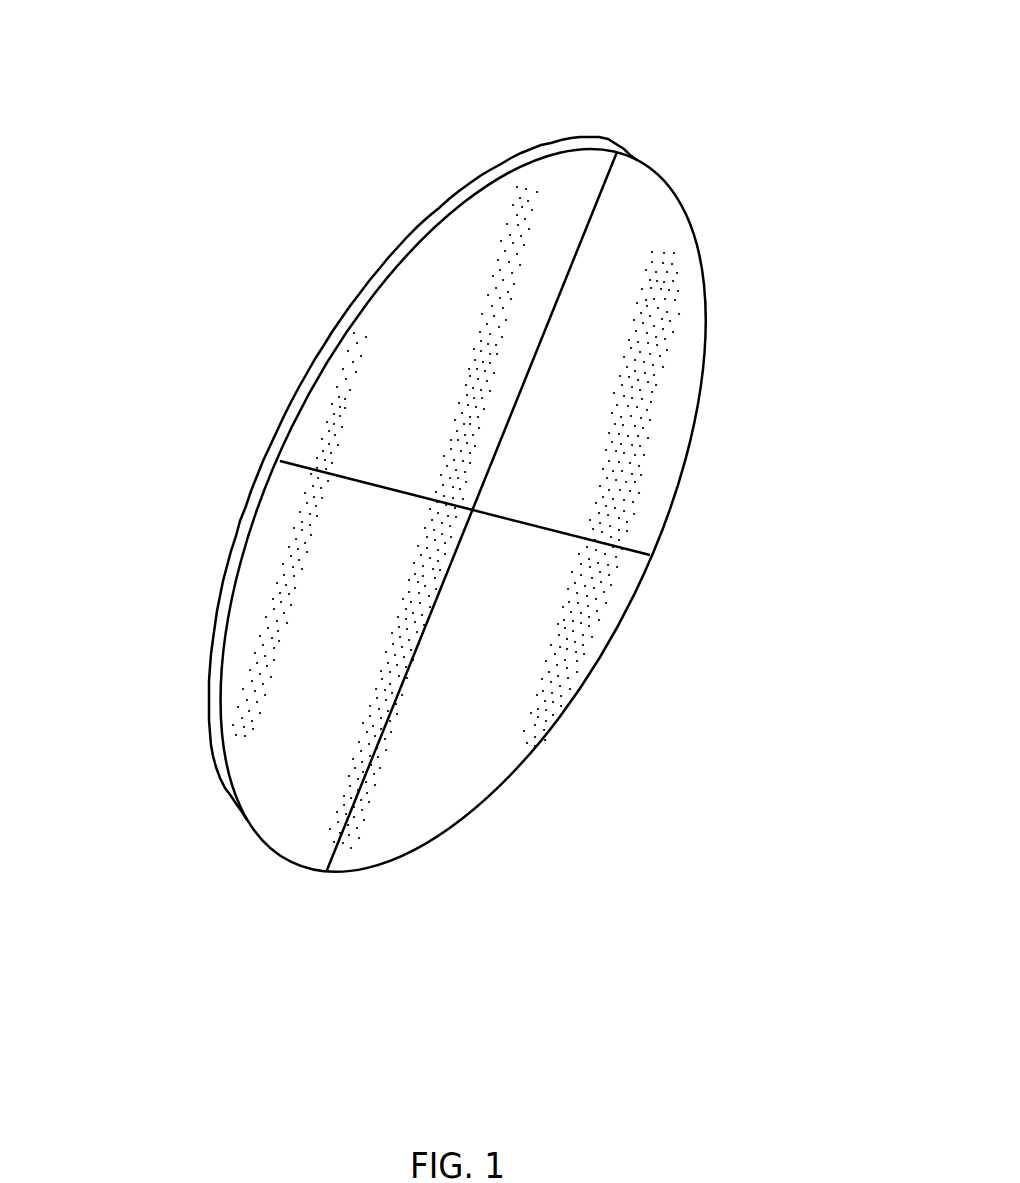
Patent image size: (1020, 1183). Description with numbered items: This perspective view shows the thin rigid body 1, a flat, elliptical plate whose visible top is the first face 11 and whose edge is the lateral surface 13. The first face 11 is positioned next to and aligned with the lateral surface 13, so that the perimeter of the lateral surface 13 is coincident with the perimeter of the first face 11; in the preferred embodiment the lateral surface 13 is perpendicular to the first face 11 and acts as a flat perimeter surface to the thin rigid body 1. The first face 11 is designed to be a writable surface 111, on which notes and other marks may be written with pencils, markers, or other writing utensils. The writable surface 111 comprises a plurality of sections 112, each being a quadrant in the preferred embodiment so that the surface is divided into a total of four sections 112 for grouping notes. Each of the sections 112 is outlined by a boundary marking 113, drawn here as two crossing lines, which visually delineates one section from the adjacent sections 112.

The thin rigid body 1 is at (549, 74).
The first face 11 is at (501, 546).
The writable surface 111 is at (485, 537).
The plurality of sections 112 is at (410, 281).
The boundary marking 113 is at (293, 462).
The lateral surface 13 is at (242, 516).